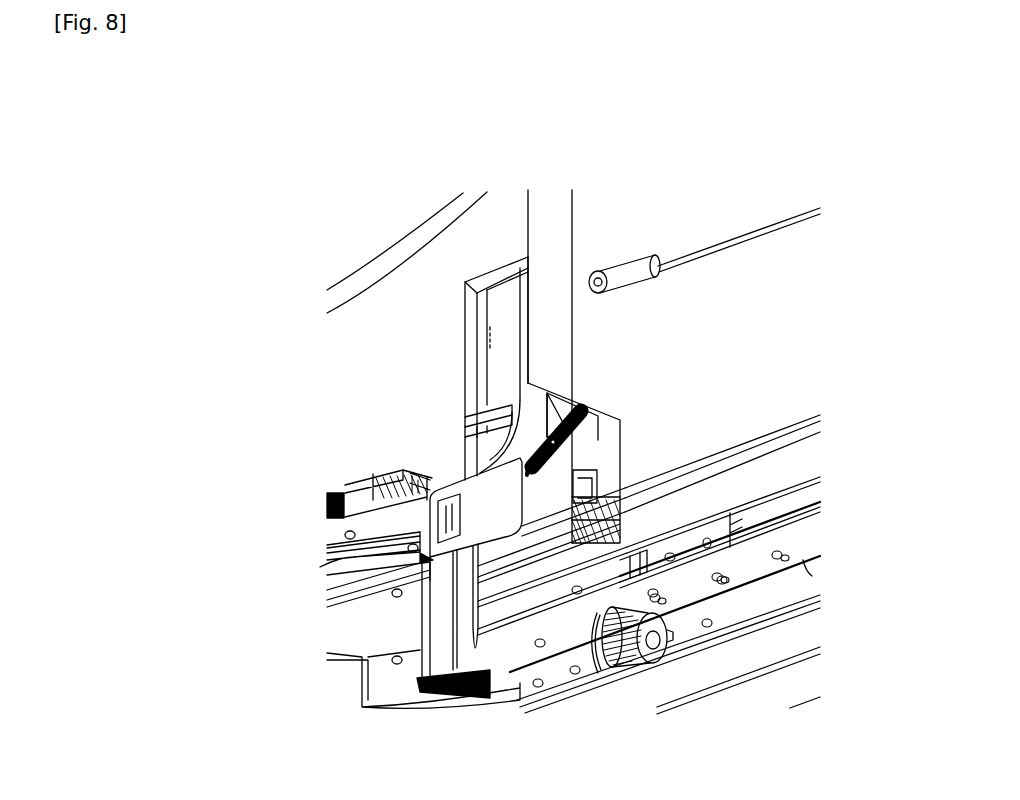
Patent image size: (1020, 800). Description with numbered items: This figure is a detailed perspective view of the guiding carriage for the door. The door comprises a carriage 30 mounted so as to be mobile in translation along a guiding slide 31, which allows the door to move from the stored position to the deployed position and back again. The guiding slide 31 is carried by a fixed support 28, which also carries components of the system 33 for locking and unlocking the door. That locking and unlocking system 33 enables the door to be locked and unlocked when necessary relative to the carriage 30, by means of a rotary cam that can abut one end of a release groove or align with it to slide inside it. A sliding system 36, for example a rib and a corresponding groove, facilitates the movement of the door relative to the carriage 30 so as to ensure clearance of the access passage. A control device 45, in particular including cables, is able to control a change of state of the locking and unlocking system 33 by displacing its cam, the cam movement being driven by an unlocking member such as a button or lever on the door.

The fixed support 28 is at (483, 233).
The control device 45 is at (703, 233).
The sliding system 36 is at (512, 330).
The carriage 30 is at (357, 340).
The locking and unlocking system 33 is at (462, 425).
The guiding slide 31 is at (493, 622).